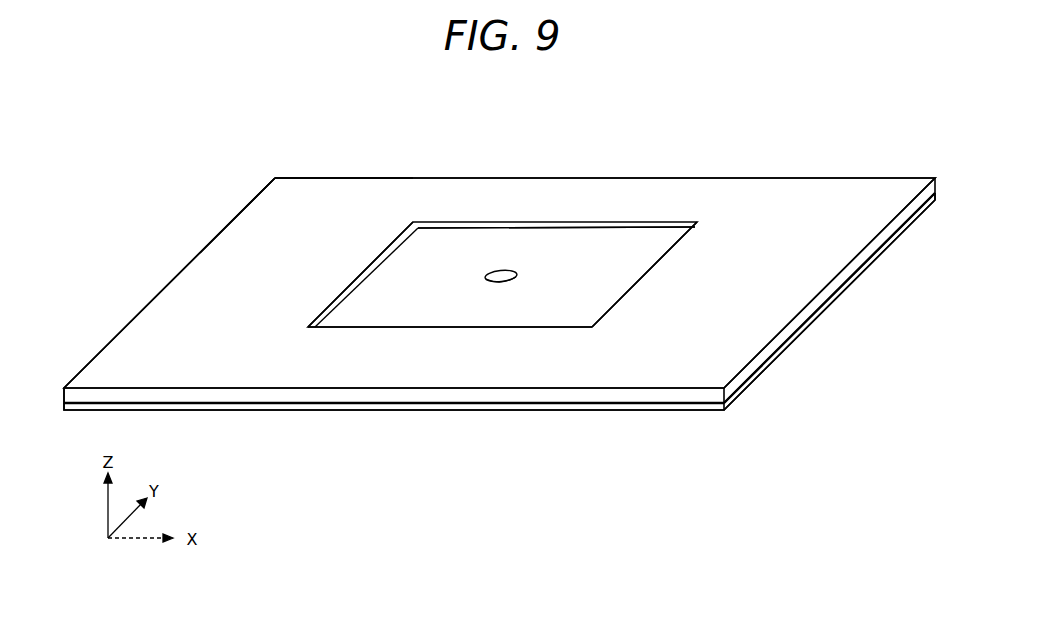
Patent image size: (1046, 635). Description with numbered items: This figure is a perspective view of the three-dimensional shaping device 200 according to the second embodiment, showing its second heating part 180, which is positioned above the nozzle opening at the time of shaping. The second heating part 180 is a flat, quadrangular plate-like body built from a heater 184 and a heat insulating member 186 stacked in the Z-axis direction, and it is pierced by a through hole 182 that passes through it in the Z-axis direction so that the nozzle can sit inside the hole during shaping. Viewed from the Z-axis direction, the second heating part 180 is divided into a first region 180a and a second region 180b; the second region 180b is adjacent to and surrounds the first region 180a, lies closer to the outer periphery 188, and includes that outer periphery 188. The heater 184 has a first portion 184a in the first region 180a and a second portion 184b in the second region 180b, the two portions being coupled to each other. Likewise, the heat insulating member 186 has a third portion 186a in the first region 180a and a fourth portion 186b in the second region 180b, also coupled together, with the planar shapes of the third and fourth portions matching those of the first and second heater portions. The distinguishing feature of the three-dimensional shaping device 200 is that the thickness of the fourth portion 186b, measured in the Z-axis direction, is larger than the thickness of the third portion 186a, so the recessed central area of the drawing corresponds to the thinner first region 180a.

The three-dimensional shaping device 200 is at (871, 131).
The second heating part 180 is at (625, 127).
The first region 180a is at (615, 255).
The second region 180b is at (730, 255).
The through hole 182 is at (495, 268).
The heater 184 is at (792, 345).
The first portion 184a is at (440, 250).
The second portion 184b is at (280, 250).
The heat insulating member 186 is at (833, 287).
The third portion 186a is at (535, 255).
The fourth portion 186b is at (353, 253).
The outer periphery 188 is at (178, 273).